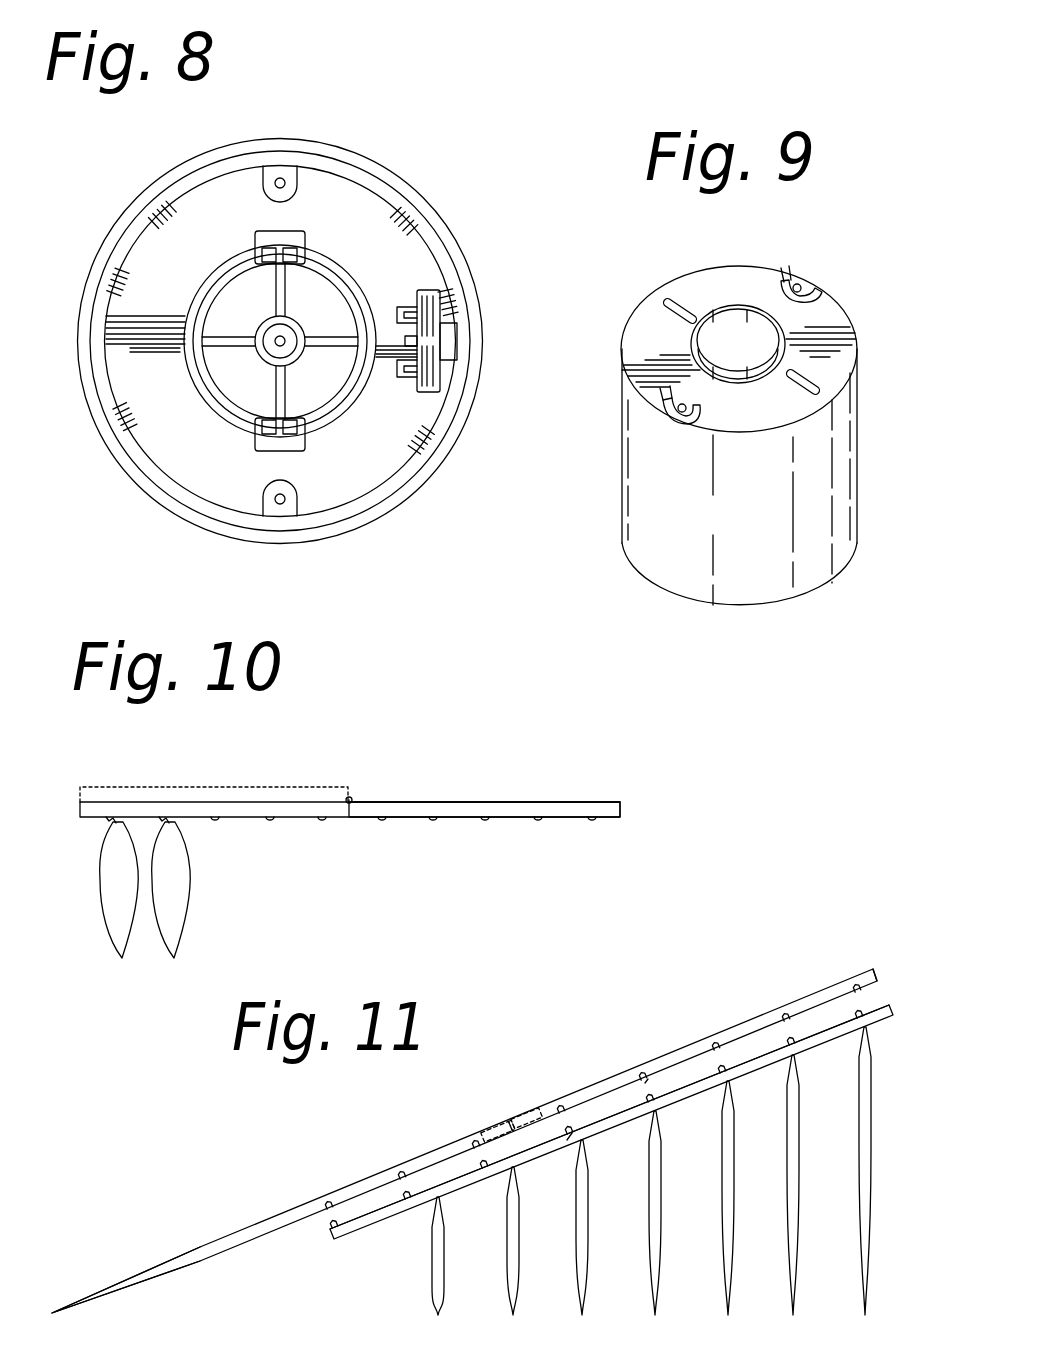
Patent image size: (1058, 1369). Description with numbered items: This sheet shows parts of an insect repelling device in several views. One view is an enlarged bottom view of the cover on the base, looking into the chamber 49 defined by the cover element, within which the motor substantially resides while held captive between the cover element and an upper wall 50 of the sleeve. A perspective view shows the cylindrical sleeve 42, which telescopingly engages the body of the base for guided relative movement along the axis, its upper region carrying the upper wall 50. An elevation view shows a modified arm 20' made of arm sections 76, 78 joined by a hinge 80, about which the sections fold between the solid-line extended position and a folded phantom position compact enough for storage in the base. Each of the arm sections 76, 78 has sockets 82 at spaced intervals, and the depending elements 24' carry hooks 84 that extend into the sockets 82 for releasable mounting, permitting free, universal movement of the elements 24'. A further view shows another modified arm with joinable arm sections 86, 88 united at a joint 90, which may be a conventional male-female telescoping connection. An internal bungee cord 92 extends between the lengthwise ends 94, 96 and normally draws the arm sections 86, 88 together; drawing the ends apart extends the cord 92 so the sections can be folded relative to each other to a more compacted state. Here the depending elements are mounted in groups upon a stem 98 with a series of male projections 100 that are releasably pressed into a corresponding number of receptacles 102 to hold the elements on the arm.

In FIG. 8, the chamber 49 is at (355, 222).
In FIG. 9, the upper wall 50 is at (700, 290).
In FIG. 9, the cylindrical sleeve 42 is at (655, 490).
In FIG. 10, the arm section 76 is at (257, 812).
In FIG. 10, the arm section 78 is at (165, 787).
In FIG. 10, the hinge 80 is at (350, 798).
In FIG. 10, the arm 20' is at (485, 756).
In FIG. 10, the sockets 82 is at (270, 820).
In FIG. 10, the hooks 84 is at (112, 823).
In FIG. 10, the elements 24' is at (121, 916).
In FIG. 11, the arm section 88 is at (373, 1178).
In FIG. 11, the lengthwise end 96 is at (55, 1308).
In FIG. 11, the lengthwise end 94 is at (872, 975).
In FIG. 11, the arm section 86 is at (607, 1085).
In FIG. 11, the stem 98 is at (764, 1058).
In FIG. 11, the male projections 100 is at (725, 1069).
In FIG. 11, the receptacles 102 is at (645, 1081).
In FIG. 11, the joint 90 is at (500, 1129).
In FIG. 11, the internal bungee cord 92 is at (528, 1112).